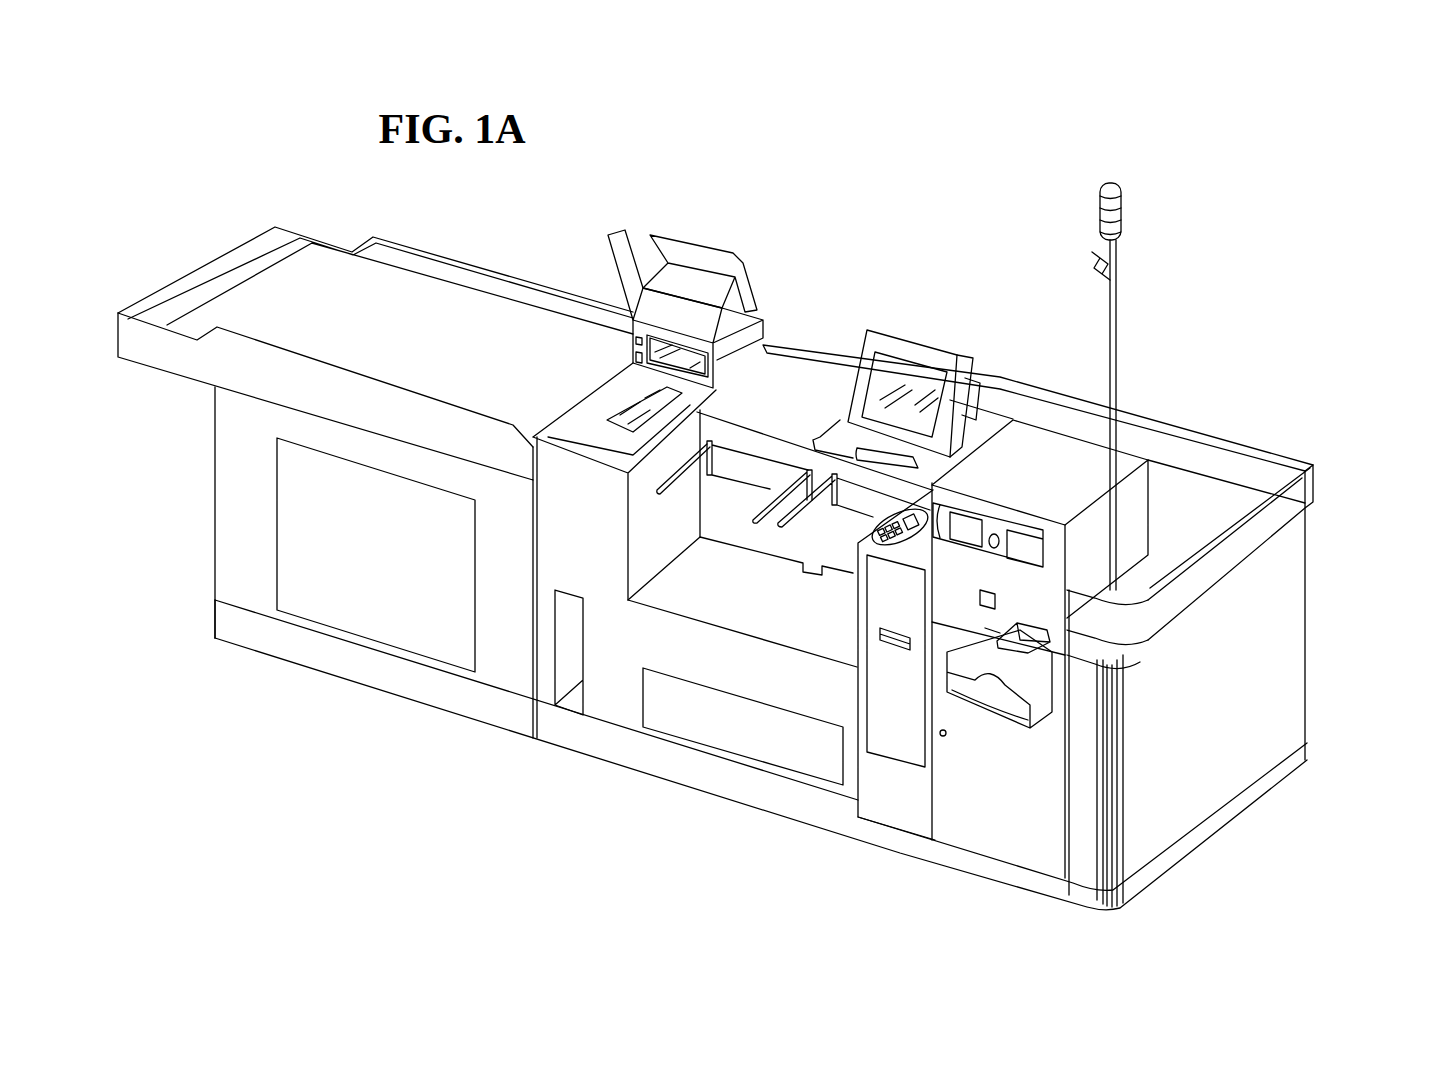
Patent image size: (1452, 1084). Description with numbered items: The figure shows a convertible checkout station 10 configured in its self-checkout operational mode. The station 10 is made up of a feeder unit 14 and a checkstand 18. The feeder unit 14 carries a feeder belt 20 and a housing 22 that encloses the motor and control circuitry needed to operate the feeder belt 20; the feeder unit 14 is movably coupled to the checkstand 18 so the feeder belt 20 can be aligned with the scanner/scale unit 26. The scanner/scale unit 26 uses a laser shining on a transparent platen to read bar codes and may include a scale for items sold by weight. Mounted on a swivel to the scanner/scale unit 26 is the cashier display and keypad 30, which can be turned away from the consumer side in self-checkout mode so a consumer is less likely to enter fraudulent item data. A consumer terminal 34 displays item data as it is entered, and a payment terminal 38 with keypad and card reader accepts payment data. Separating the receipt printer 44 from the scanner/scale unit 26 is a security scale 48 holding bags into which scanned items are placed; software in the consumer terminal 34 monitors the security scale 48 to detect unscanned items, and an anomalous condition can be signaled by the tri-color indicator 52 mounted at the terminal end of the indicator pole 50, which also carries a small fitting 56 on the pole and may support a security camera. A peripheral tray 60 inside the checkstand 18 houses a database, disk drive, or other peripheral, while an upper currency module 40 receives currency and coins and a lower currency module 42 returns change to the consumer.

The convertible checkout station 10 is at (335, 806).
The feeder unit 14 is at (367, 482).
The checkstand 18 is at (1330, 644).
The feeder belt 20 is at (267, 298).
The housing 22 is at (383, 672).
The scanner/scale unit 26 is at (590, 432).
The cashier display and keypad 30 is at (688, 240).
The consumer terminal 34 is at (915, 338).
The payment terminal 38 is at (867, 530).
The upper currency module 40 is at (1133, 502).
The lower currency module 42 is at (998, 835).
The receipt printer 44 is at (892, 678).
The security scale 48 is at (703, 603).
The indicator pole 50 is at (1112, 386).
The indicator light 52 is at (1098, 212).
The hook 56 is at (1093, 271).
The peripheral tray 60 is at (688, 715).